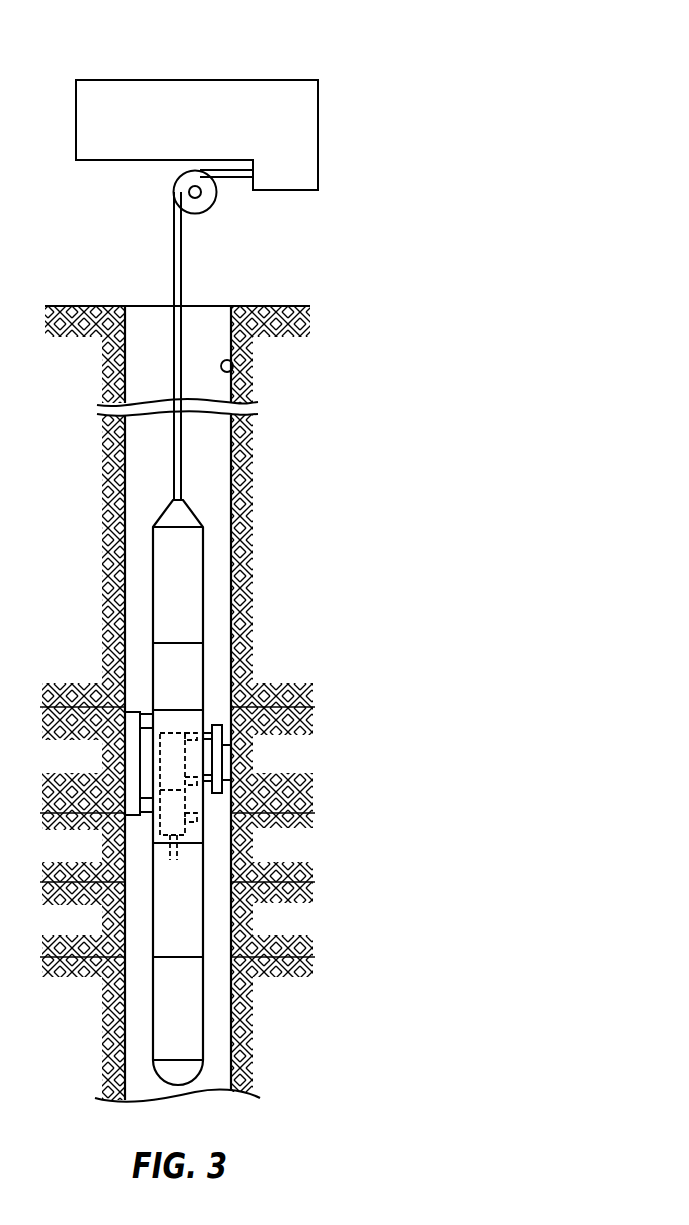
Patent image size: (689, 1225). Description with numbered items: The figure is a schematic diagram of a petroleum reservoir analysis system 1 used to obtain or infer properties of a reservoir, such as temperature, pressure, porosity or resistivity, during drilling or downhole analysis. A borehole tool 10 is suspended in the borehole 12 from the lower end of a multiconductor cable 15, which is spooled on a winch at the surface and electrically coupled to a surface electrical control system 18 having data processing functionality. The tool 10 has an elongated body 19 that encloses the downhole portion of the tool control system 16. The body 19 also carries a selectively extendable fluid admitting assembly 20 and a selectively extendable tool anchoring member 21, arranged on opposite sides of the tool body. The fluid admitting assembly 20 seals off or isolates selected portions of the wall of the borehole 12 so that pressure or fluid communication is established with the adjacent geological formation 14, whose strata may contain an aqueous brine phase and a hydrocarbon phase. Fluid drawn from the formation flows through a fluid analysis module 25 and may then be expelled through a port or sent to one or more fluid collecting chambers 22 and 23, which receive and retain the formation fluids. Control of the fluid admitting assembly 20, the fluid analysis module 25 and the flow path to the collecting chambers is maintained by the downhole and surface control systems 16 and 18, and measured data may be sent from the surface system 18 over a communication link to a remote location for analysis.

The petroleum reservoir analysis system 1 is at (299, 47).
The borehole tool 10 is at (218, 607).
The borehole 12 is at (233, 362).
The geological formation 14 is at (294, 766).
The multiconductor cable 15 is at (183, 270).
The tool control system 16 is at (192, 691).
The electrical control system 18 is at (284, 190).
The elongated body 19 is at (185, 792).
The fluid admitting assembly 20 is at (253, 710).
The tool anchoring member 21 is at (130, 762).
The fluid collecting chamber 22 is at (191, 914).
The fluid collecting chamber 23 is at (191, 1021).
The fluid analysis module 25 is at (190, 813).